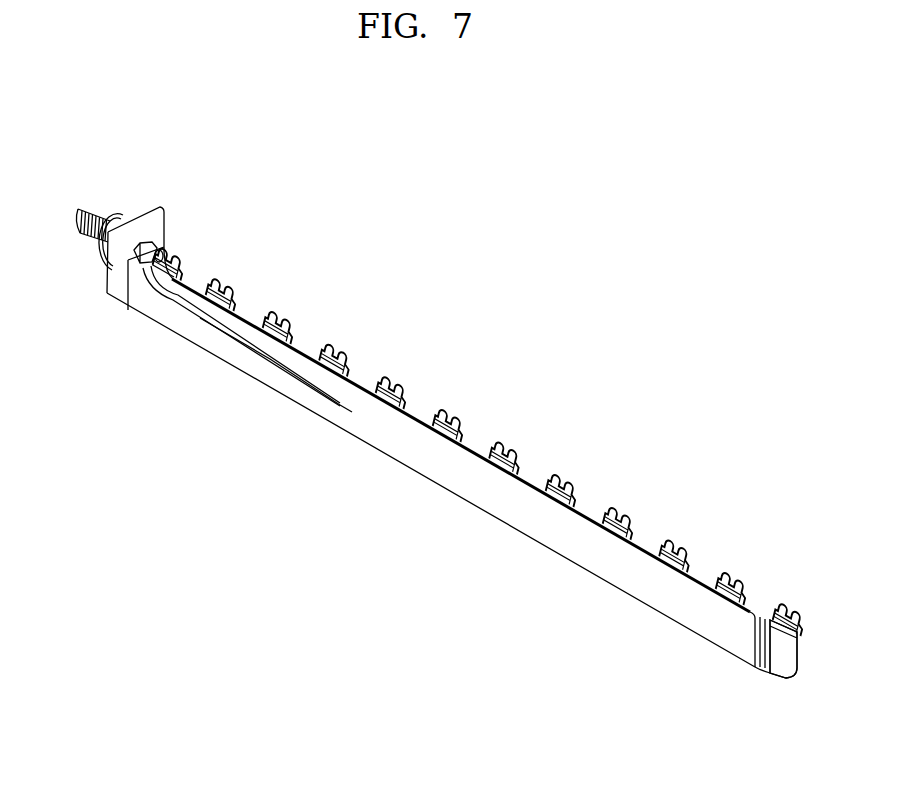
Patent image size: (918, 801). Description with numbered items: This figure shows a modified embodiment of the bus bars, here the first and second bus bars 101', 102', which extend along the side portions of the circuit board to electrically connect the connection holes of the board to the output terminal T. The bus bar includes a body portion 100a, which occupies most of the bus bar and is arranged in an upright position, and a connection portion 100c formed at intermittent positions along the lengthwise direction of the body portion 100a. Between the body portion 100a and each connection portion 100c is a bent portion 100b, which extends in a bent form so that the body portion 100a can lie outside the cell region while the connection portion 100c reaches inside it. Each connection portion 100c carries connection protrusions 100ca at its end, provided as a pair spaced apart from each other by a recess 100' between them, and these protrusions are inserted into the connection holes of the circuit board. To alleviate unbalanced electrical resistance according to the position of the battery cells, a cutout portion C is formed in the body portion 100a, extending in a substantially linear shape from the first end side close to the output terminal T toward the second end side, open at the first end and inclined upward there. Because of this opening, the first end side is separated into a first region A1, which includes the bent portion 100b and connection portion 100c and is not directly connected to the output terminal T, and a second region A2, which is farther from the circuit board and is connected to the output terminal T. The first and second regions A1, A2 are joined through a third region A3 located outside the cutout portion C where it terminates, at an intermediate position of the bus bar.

The output terminal T is at (88, 212).
The cutout portion C is at (219, 335).
The first region A1 is at (273, 353).
The second region A2 is at (302, 397).
The third region A3 is at (378, 430).
The recess 100' is at (451, 439).
The first bus bar 101' is at (712, 504).
The second bus bar 102' is at (715, 515).
The body portion 100a is at (693, 610).
The bent portion 100b is at (672, 555).
The connection portion 100c is at (455, 383).
The connection protrusion 100ca is at (455, 383).